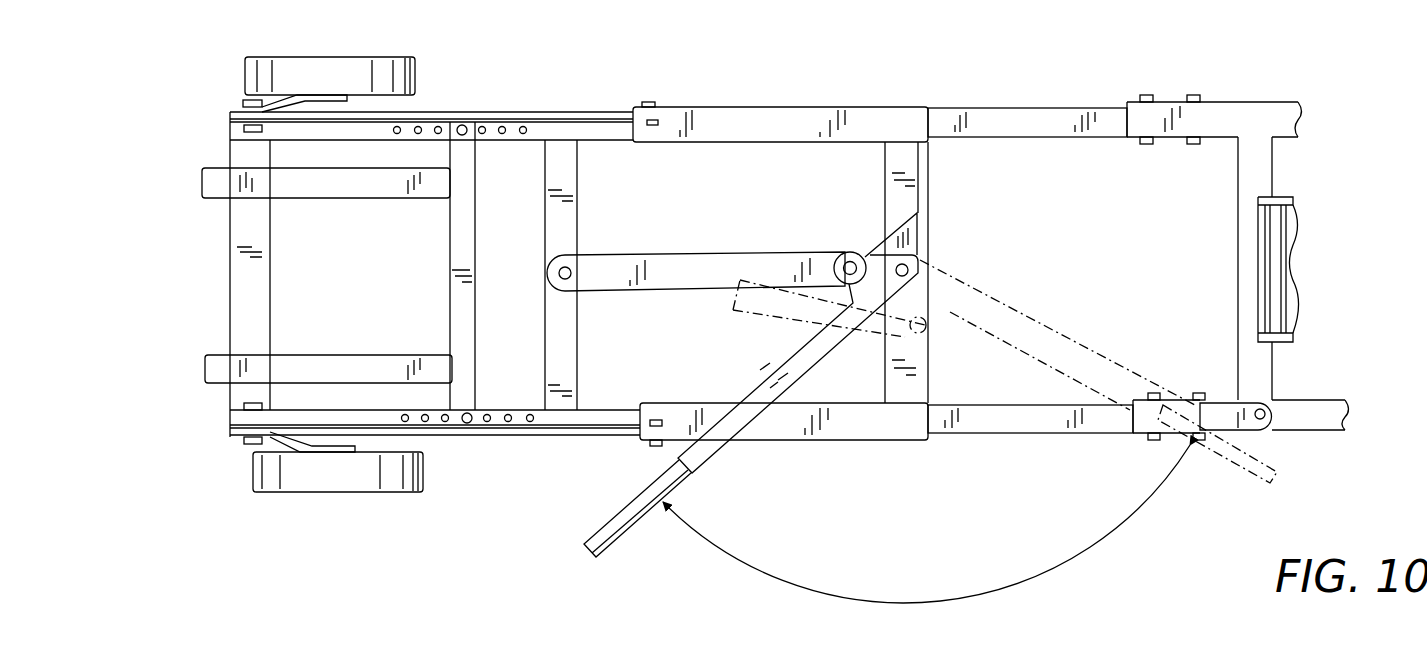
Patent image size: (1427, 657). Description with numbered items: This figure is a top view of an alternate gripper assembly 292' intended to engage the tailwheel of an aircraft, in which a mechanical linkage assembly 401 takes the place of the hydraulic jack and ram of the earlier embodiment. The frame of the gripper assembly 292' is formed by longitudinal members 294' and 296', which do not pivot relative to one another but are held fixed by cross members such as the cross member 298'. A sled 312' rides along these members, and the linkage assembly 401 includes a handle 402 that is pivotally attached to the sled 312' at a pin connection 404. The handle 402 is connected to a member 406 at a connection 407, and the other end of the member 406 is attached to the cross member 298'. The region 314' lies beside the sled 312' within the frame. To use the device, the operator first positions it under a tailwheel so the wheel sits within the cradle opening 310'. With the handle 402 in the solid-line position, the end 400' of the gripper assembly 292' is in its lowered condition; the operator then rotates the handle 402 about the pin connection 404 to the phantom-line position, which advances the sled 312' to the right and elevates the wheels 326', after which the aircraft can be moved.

The cradle opening 310' is at (421, 272).
The wheels 326' is at (330, 58).
The end of gripper assembly 400' is at (338, 505).
The cross member 298' is at (603, 275).
The gripper assembly 292' is at (780, 91).
The frame cross member 314' is at (955, 272).
The sled 312' is at (784, 458).
The longitudinal member 294' is at (1115, 219).
The longitudinal member 296' is at (1138, 449).
The member 406 is at (694, 253).
The handle 402 is at (780, 377).
The connection 407 is at (848, 250).
The pin connection 404 is at (920, 263).
The mechanical linkage assembly 401 is at (729, 464).